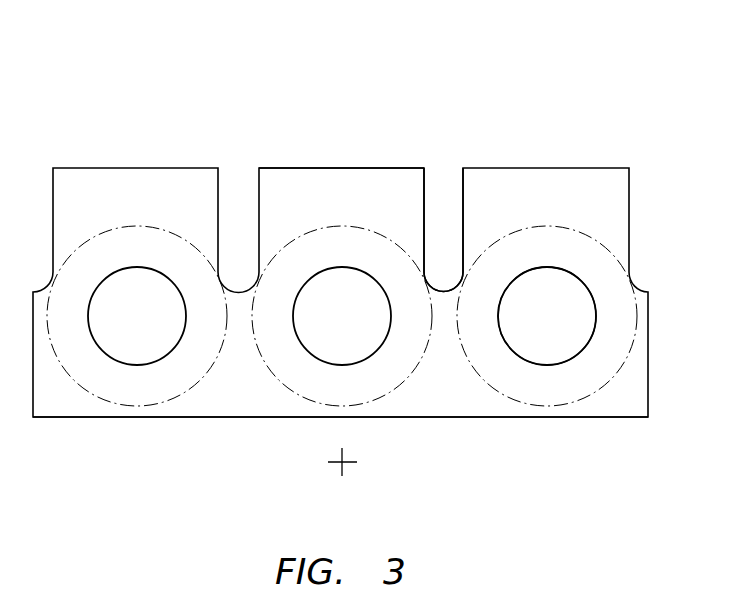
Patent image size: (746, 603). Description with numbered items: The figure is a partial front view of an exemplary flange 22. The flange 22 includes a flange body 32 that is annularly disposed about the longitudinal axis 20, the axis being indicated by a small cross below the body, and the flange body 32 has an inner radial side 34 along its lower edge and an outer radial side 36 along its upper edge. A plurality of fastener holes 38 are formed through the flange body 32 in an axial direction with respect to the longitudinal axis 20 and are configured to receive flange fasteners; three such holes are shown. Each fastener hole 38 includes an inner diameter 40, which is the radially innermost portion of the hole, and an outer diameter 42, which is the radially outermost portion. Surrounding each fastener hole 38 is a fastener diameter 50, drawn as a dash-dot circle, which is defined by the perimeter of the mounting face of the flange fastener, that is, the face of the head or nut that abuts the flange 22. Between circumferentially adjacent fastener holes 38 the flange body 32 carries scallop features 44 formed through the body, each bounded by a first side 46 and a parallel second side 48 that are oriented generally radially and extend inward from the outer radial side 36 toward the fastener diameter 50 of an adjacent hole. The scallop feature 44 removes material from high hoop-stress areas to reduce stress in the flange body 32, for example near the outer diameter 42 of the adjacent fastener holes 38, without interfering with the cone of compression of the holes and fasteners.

The longitudinal axis 20 is at (344, 463).
The flange 22 is at (597, 122).
The flange body 32 is at (630, 400).
The inner radial side 34 is at (185, 417).
The outer radial side 36 is at (333, 168).
The fastener holes 38 is at (586, 283).
The inner diameter 40 is at (546, 370).
The outer diameter 42 is at (542, 262).
The scallop feature 44 is at (444, 176).
The first side 46 is at (438, 188).
The second side 48 is at (455, 186).
The fastener diameter 50 is at (644, 315).